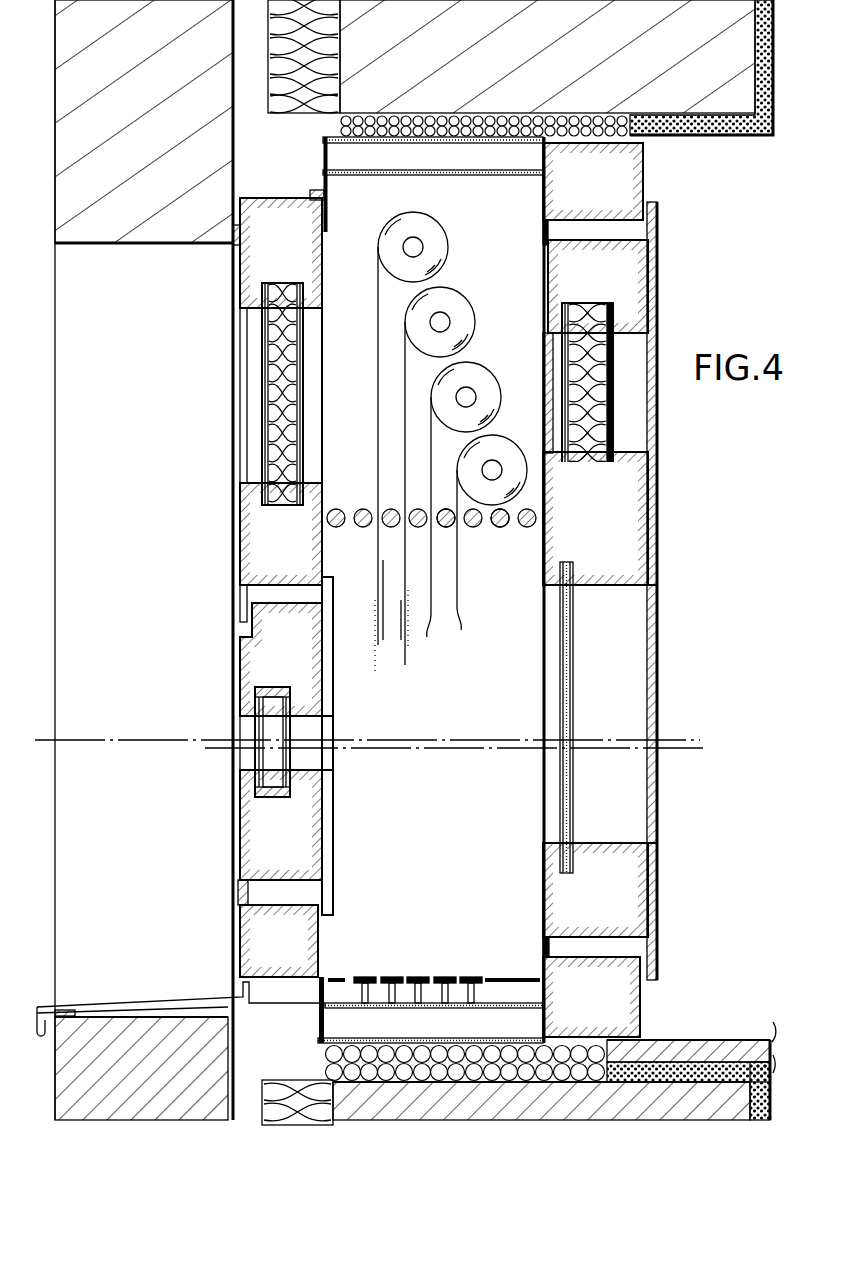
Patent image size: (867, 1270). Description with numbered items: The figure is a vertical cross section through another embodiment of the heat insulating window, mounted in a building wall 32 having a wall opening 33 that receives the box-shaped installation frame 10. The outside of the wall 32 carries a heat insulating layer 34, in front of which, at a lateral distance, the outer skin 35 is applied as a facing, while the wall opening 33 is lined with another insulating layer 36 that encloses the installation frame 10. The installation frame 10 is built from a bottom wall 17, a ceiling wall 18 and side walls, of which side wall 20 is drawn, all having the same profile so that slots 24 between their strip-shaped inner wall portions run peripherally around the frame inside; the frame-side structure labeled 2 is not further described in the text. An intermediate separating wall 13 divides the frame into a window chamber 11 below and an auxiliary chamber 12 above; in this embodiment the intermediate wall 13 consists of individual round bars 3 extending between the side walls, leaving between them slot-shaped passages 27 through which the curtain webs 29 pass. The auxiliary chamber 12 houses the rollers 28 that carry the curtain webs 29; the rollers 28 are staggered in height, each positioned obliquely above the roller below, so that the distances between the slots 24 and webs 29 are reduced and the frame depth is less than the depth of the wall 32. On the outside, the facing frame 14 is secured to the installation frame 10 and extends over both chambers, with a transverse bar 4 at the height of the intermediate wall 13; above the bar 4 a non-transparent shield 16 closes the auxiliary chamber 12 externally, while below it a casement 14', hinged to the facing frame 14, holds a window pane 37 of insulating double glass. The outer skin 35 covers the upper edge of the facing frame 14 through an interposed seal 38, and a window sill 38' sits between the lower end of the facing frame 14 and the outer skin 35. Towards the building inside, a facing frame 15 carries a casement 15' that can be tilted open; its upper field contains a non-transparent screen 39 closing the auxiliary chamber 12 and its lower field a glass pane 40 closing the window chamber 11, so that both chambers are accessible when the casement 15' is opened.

The side wall of enclosure 2 is at (640, 533).
The round bars 3 is at (500, 530).
The transverse bar 4 is at (240, 305).
The installation frame 10 is at (318, 148).
The window chamber 11 is at (452, 845).
The auxiliary chamber 12 is at (366, 333).
The intermediate separating wall 13 is at (548, 518).
The facing frame of outer window 14 is at (234, 594).
The casement 14' is at (238, 754).
The facing frame of inner window 15 is at (628, 590).
The casement 15' is at (630, 588).
The non-transparent shield 16 is at (263, 393).
The bottom wall 17 is at (338, 1018).
The ceiling wall 18 is at (323, 172).
The side wall 20 is at (510, 667).
The slots 24 is at (413, 622).
The slot-shaped passages 27 is at (430, 532).
The rollers 28 is at (433, 228).
The curtain webs 29 is at (377, 364).
The building wall 32 is at (742, 50).
The wall opening 33 is at (713, 232).
The heat insulating layer 34 is at (290, 25).
The outer skin 35 is at (127, 165).
The insulating layer 36 is at (495, 110).
The window pane 37 is at (248, 752).
The seal 38 is at (203, 267).
The window sill 38' is at (181, 982).
The non-transparent screen 39 is at (597, 400).
The glass pane 40 is at (566, 697).